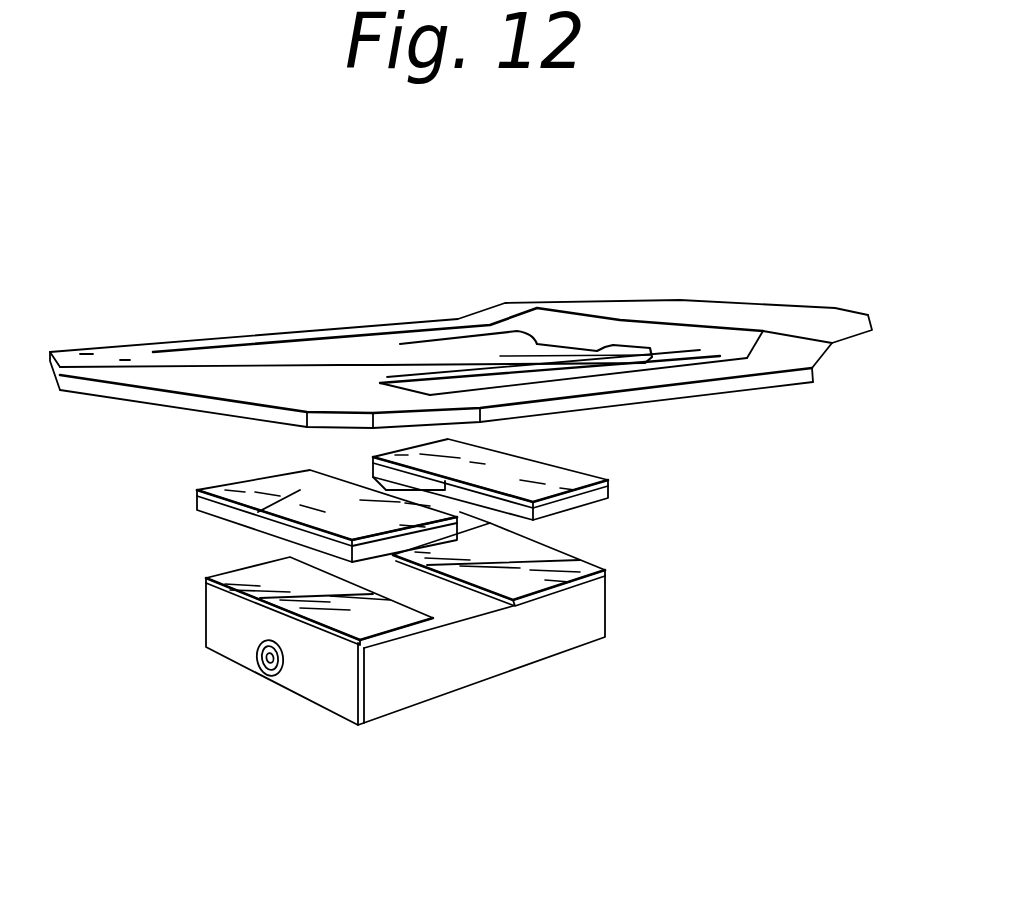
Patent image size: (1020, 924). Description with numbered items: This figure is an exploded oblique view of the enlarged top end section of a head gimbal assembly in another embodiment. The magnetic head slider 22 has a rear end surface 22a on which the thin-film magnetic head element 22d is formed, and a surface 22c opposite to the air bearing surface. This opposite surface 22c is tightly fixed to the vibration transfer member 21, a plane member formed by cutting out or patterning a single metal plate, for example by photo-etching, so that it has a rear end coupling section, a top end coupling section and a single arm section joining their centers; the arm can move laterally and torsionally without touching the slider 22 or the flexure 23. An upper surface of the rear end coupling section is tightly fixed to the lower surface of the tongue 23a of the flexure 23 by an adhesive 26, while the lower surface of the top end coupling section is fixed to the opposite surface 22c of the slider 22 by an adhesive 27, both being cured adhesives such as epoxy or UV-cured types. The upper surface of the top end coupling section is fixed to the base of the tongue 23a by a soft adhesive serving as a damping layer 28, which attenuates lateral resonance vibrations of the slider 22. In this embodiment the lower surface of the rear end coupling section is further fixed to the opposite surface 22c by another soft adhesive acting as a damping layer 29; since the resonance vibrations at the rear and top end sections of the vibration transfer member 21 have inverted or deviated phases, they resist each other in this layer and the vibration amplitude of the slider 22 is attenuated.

The vibration transfer member 21 is at (559, 464).
The magnetic head slider 22 is at (399, 657).
The rear end surface 22a is at (228, 630).
The surface opposite to the ABS 22c is at (462, 608).
The thin-film magnetic head element 22d is at (268, 665).
The flexure 23 is at (461, 304).
The tongue 23a is at (427, 355).
The adhesive 26 is at (513, 476).
The adhesive 27 is at (250, 582).
The damping layer 28 is at (308, 490).
The damping layer 29 is at (540, 555).